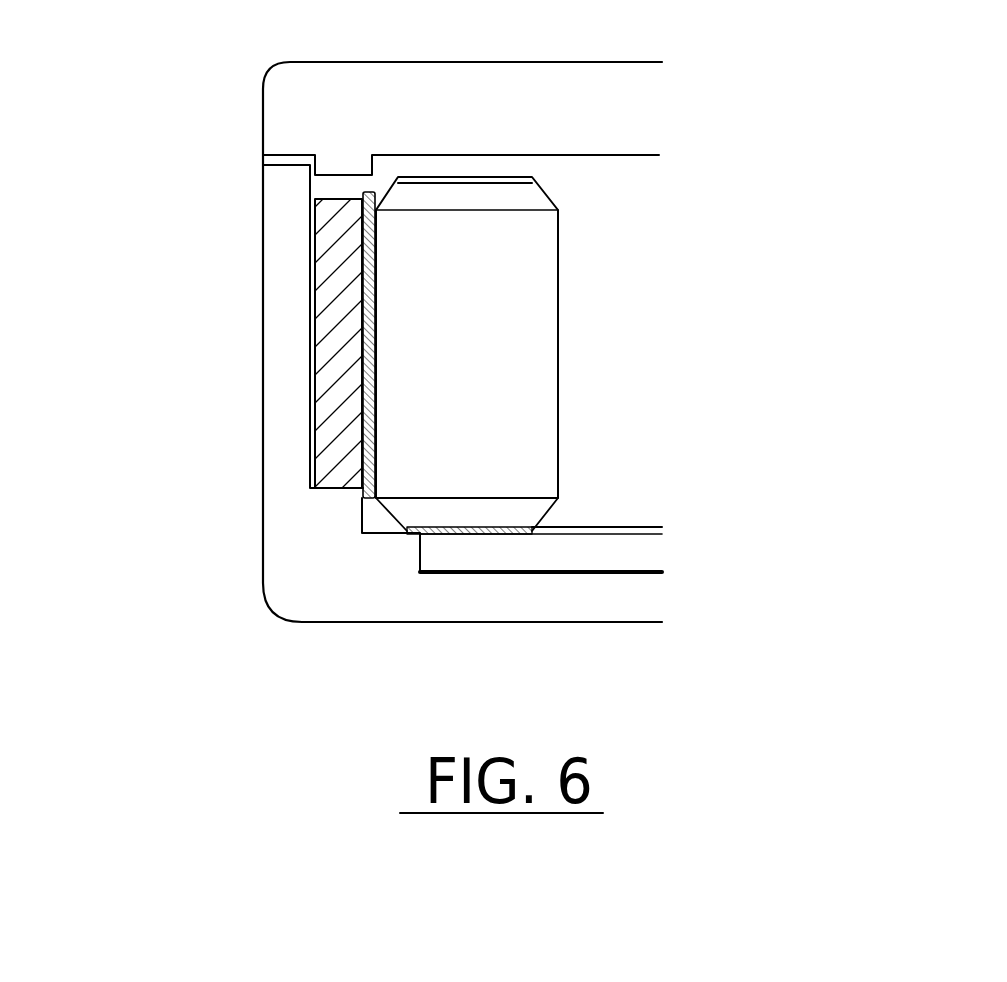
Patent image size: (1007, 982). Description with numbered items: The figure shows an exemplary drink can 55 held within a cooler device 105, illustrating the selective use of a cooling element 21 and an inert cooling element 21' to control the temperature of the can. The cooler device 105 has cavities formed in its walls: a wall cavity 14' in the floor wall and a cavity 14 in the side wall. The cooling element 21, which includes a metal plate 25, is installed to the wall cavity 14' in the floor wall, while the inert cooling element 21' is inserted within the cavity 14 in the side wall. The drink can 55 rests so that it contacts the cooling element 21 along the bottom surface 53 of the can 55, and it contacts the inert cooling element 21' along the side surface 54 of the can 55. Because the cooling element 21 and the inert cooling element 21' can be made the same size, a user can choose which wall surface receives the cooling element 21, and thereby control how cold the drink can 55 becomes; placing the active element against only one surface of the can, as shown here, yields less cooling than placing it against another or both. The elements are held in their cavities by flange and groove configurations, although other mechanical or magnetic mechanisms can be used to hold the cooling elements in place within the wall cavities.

The cooler device 105 is at (217, 56).
The cavity 14 is at (411, 358).
The wall cavity 14' is at (512, 613).
The side surface 54 is at (355, 338).
The inert cooling element 21' is at (262, 345).
The drink can 55 is at (521, 304).
The bottom surface 53 is at (471, 526).
The metal plate 25 is at (611, 524).
The cooling element 21 is at (624, 556).